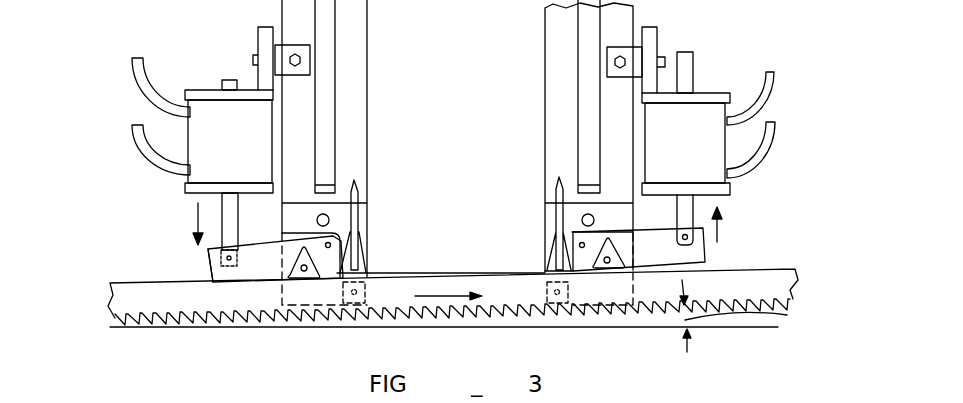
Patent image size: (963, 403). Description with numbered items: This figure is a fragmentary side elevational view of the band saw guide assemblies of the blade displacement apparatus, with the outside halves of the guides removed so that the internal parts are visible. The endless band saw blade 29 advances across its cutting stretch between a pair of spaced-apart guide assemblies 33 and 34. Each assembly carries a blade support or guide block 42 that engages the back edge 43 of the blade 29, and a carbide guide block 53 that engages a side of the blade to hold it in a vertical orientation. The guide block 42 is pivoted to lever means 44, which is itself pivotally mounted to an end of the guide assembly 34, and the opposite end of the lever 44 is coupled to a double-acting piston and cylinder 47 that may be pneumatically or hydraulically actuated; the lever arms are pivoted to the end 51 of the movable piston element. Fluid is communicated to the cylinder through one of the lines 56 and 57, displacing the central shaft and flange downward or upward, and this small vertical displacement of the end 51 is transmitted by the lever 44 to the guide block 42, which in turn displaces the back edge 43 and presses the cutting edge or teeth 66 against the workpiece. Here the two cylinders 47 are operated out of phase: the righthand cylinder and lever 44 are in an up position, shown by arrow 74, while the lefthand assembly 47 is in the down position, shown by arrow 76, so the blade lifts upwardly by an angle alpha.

The band saw blade 29 is at (767, 287).
The guide assembly 33 is at (378, 131).
The guide assembly 34 is at (538, 145).
The guide block 42 is at (313, 263).
The back edge 43 is at (462, 270).
The lever means 44 is at (220, 270).
The piston and cylinder 47 is at (208, 110).
The end of movable piston element 51 is at (203, 261).
The guide block 53 is at (545, 287).
The line 56 is at (130, 67).
The line 57 is at (130, 137).
The cutting edge 66 is at (330, 330).
The arrow 74 is at (720, 232).
The arrow 76 is at (196, 218).